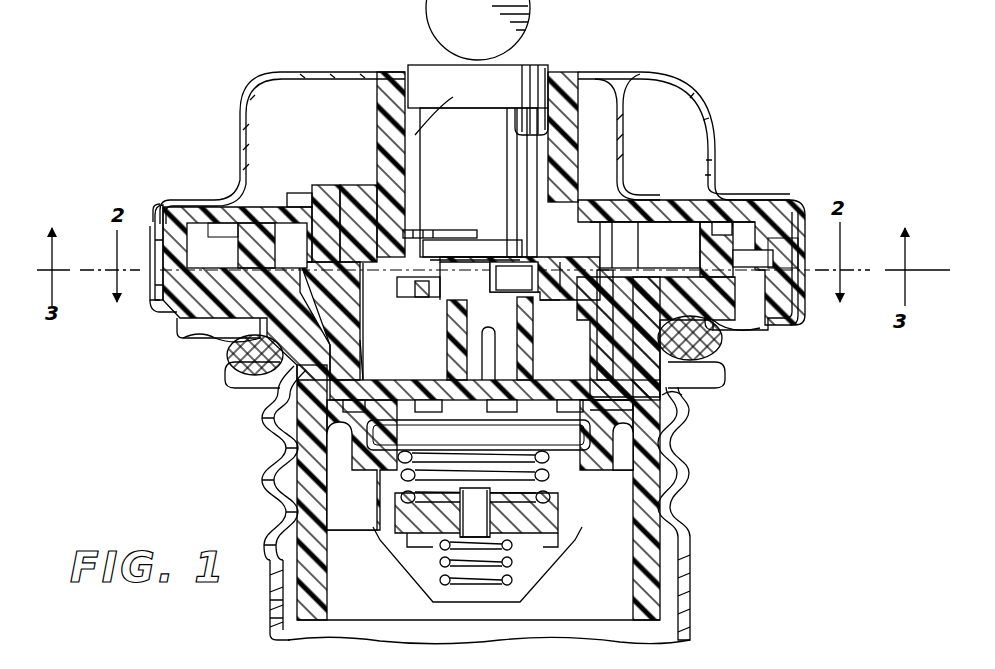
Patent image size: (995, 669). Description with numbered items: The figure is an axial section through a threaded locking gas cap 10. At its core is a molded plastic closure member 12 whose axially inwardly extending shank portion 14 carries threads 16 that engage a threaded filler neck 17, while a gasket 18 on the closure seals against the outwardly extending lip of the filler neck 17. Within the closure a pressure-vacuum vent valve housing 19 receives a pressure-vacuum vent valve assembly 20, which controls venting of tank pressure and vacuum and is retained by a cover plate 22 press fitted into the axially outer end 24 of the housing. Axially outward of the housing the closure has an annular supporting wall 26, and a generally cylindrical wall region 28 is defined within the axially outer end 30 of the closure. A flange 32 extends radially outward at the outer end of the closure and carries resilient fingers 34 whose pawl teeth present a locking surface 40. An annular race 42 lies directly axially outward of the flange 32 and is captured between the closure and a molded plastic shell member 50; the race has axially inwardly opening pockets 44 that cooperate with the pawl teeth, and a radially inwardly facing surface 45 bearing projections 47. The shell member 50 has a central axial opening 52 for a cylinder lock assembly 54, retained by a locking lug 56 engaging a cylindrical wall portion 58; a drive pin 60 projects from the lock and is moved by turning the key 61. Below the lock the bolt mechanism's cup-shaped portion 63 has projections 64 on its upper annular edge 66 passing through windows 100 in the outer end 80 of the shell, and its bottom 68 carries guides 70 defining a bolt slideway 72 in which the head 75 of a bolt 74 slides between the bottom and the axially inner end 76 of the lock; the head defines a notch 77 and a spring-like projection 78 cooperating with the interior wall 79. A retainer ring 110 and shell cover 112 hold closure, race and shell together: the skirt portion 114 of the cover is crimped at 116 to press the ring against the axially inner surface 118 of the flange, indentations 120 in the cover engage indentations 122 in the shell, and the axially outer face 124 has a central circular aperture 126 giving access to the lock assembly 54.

The locking cap 10 is at (165, 412).
The closure member 12 is at (307, 363).
The shank portion 14 is at (268, 500).
The threads 16 is at (693, 500).
The filler neck 17 is at (268, 556).
The gasket 18 is at (700, 335).
The pressure-vacuum vent valve housing 19 is at (690, 428).
The pressure-vacuum vent valve assembly 20 is at (525, 550).
The cover plate 22 is at (395, 426).
The axially outer end of housing 24 is at (635, 406).
The annular supporting wall 26 is at (373, 400).
The cylindrical wall region 28 is at (690, 392).
The axially outer end of closure 30 is at (317, 347).
The flange 32 is at (762, 302).
The resilient fingers 34 is at (755, 324).
The locking surface 40 is at (783, 252).
The annular race 42 is at (765, 240).
The pockets 44 is at (722, 262).
The radially inwardly facing surface 45 is at (712, 246).
The projections 47 is at (247, 245).
The shell member 50 is at (302, 192).
The central axial opening 52 is at (553, 54).
The cylinder lock assembly 54 is at (478, 182).
The locking lug 56 is at (423, 248).
The cylindrical wall portion 58 is at (403, 234).
The drive pin 60 is at (532, 283).
The key 61 is at (520, 40).
The cup-shaped portion 63 is at (362, 336).
The projections 64 is at (333, 186).
The upper annular edge 66 is at (590, 210).
The bottom 68 is at (590, 413).
The guides 70 is at (450, 332).
The bolt slideway 72 is at (495, 354).
The bolt 74 is at (548, 300).
The head 75 is at (445, 285).
The axially inner end of lock assembly 76 is at (465, 262).
The notch 77 is at (555, 275).
The spring-like projection 78 is at (418, 293).
The interior wall 79 is at (364, 362).
The outer end of shell member 80 is at (675, 210).
The windows 100 is at (350, 186).
The retainer ring 110 is at (790, 332).
The shell cover 112 is at (712, 132).
The skirt portion 114 is at (158, 262).
The crimp 116 is at (160, 302).
The axially inner surface of flange 118 is at (192, 332).
The indentations 120 is at (162, 205).
The indentations 122 is at (152, 222).
The axially outer face 124 is at (352, 72).
The central circular aperture 126 is at (398, 72).